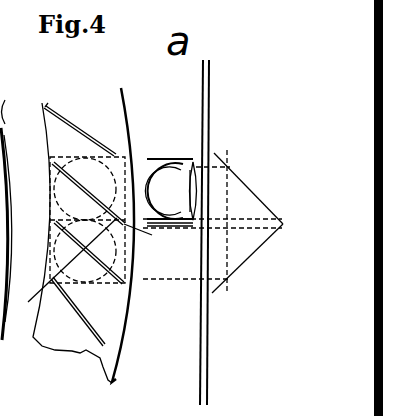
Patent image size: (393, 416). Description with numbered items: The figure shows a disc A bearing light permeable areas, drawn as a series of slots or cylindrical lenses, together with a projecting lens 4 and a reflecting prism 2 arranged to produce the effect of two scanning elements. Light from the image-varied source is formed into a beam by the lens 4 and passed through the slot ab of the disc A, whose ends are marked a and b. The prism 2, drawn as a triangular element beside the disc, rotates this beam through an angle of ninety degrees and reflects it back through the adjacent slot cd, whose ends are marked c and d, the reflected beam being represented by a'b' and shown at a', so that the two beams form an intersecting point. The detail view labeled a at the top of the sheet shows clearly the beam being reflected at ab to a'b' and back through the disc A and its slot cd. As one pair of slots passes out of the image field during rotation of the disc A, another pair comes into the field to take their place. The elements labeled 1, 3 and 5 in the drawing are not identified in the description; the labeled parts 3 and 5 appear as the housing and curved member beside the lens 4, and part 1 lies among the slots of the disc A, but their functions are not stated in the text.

The lower ball / sphere 1 is at (85, 253).
The prism 2 is at (52, 157).
The reflector ring 3 is at (155, 164).
The lens 4 is at (196, 164).
The lamp housing 5 is at (173, 160).
The slot end point a is at (136, 209).
The reflected beam position a' is at (32, 279).
The slot end point b is at (277, 197).
The slot end point c is at (64, 267).
The slot end point d is at (103, 342).
The disc A is at (206, 335).